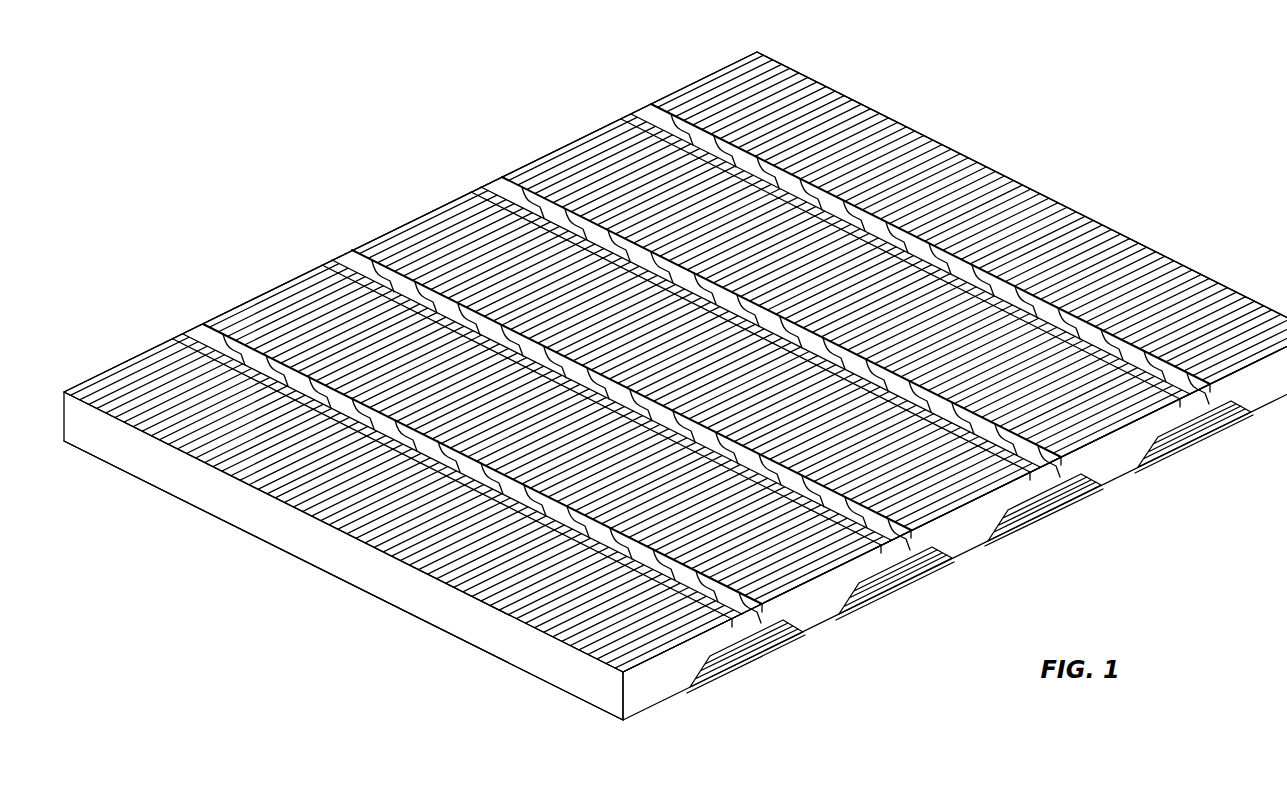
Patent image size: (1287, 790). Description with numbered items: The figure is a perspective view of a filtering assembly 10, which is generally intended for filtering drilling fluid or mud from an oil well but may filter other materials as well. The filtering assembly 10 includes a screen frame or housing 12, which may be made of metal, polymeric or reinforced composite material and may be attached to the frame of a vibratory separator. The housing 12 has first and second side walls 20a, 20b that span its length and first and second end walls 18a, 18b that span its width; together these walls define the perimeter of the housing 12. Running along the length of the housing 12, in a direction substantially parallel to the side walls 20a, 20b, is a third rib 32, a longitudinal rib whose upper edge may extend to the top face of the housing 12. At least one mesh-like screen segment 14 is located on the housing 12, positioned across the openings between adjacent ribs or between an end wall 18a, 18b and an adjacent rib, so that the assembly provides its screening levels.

The filtering assembly 10 is at (1080, 154).
The housing 12 is at (178, 508).
The screen segment 14 is at (276, 300).
The first end wall 18a is at (1192, 268).
The second end wall 18b is at (297, 566).
The first side wall 20a is at (814, 613).
The second side wall 20b is at (350, 250).
The third rib 32 is at (887, 528).